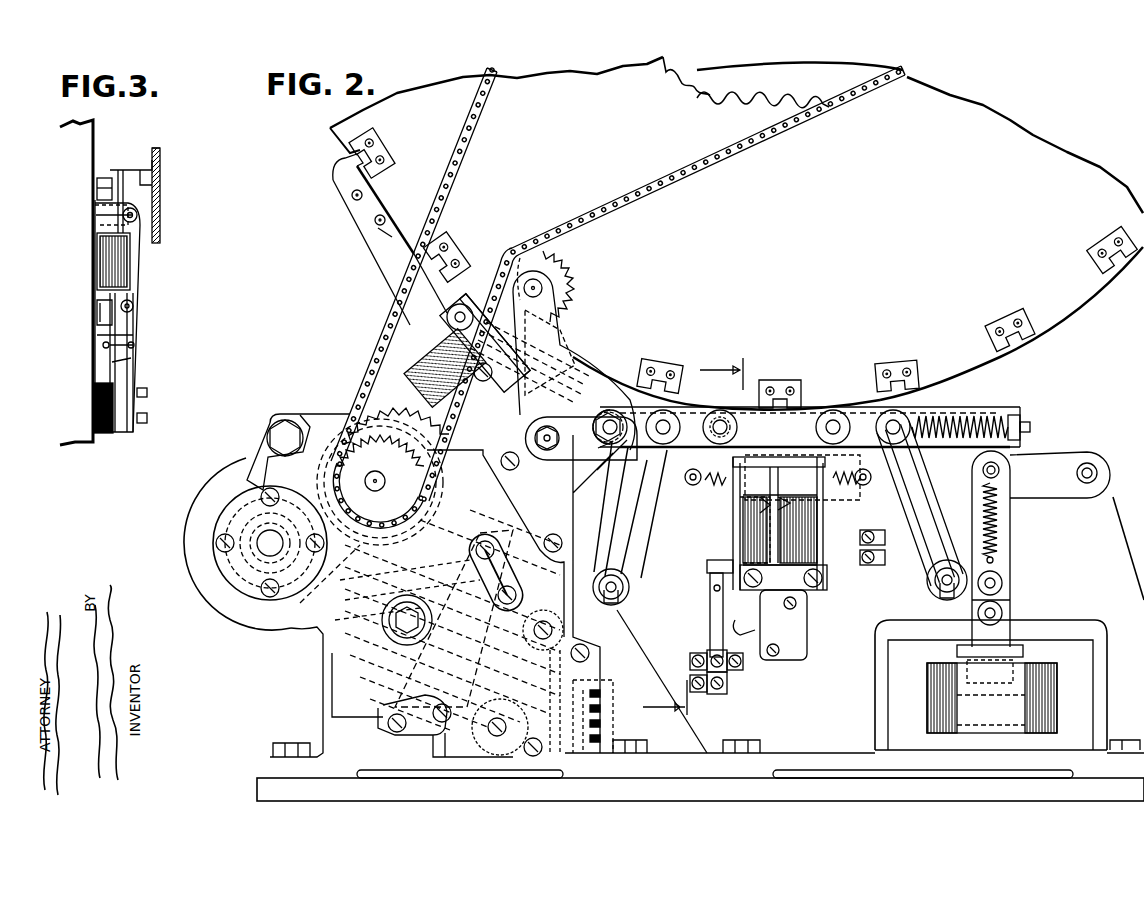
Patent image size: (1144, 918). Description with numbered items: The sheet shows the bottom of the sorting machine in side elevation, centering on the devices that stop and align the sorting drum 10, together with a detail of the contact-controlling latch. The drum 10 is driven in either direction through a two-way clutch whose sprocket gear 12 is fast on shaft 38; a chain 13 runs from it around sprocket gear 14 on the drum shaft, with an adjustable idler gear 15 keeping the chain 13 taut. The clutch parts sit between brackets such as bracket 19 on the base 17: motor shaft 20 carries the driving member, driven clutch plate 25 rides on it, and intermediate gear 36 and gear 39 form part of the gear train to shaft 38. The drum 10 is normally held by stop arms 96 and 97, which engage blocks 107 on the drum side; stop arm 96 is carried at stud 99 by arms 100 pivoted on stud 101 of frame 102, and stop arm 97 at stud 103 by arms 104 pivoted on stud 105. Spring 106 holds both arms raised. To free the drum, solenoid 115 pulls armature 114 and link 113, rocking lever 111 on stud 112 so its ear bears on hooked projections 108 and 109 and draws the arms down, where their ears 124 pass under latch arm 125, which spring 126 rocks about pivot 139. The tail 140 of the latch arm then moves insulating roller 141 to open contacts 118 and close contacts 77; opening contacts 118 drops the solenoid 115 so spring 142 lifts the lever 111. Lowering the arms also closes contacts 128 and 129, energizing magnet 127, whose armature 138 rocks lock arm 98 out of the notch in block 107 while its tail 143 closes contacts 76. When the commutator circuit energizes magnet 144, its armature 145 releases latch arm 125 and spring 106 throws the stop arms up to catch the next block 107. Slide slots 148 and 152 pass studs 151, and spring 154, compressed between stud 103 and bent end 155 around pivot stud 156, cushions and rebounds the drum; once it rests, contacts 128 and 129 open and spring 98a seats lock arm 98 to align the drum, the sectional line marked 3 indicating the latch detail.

In FIG. 2, the section line 3- 3 is at (545, 557).
In FIG. 2, the sorting drum 10 is at (736, 228).
In FIG. 2, the sprocket gear 12 is at (380, 482).
In FIG. 2, the chain 13 is at (683, 178).
In FIG. 2, the sprocket gear 14 is at (710, 97).
In FIG. 2, the adjustable idler gear 15 is at (565, 275).
In FIG. 2, the base 17 is at (612, 787).
In FIG. 2, the bracket 19 is at (332, 742).
In FIG. 2, the shaft 20 is at (260, 533).
In FIG. 2, the driven clutch plate 25 is at (204, 588).
In FIG. 2, the intermediate gear 36 is at (300, 606).
In FIG. 2, the shaft 38 is at (375, 491).
In FIG. 2, the gear 39 is at (420, 412).
In FIG. 2, the contacts 76 is at (573, 363).
In FIG. 3, the contacts 77 is at (113, 320).
In FIG. 3, the stop arm 96 is at (157, 197).
In FIG. 2, the stop arm 96 is at (760, 405).
In FIG. 2, the stop arm 97 is at (845, 404).
In FIG. 2, the lock arm 98 is at (400, 245).
In FIG. 2, the spring 98a is at (582, 438).
In FIG. 2, the stud 99 is at (670, 410).
In FIG. 2, the arms 100 is at (645, 505).
In FIG. 2, the stud 101 is at (628, 590).
In FIG. 3, the frame 102 is at (75, 447).
In FIG. 2, the frame 102 is at (777, 720).
In FIG. 2, the stud 103 is at (905, 418).
In FIG. 2, the arms 104 is at (915, 540).
In FIG. 2, the stud 105 is at (935, 585).
In FIG. 2, the spring 106 is at (875, 508).
In FIG. 2, the block 107 is at (385, 150).
In FIG. 2, the hooked projection 108 is at (652, 477).
In FIG. 2, the hooked projection 109 is at (805, 462).
In FIG. 2, the lever 111 is at (1048, 462).
In FIG. 2, the stud 112 is at (1095, 465).
In FIG. 2, the link 113 is at (1012, 568).
In FIG. 2, the armature 114 is at (1023, 650).
In FIG. 2, the solenoid 115 is at (1057, 680).
In FIG. 3, the contacts 118 is at (133, 338).
In FIG. 2, the contacts 118 is at (710, 598).
In FIG. 3, the ear 124 is at (147, 138).
In FIG. 3, the latch arm 125 is at (120, 170).
In FIG. 3, the spring 126 is at (115, 358).
In FIG. 2, the spring 126 is at (745, 630).
In FIG. 2, the magnet 127 is at (425, 378).
In FIG. 2, the contacts 128 is at (800, 528).
In FIG. 2, the contacts 129 is at (800, 512).
In FIG. 2, the armature 138 is at (435, 345).
In FIG. 3, the pivot 139 is at (136, 218).
In FIG. 3, the tail 140 is at (135, 268).
In FIG. 2, the tail 140 is at (735, 522).
In FIG. 3, the insulating roller 141 is at (134, 306).
In FIG. 2, the insulating roller 141 is at (707, 565).
In FIG. 2, the spring 142 is at (1012, 520).
In FIG. 2, the tail 143 is at (607, 377).
In FIG. 3, the magnet 144 is at (110, 262).
In FIG. 2, the magnet 144 is at (830, 540).
In FIG. 3, the armature 145 is at (104, 216).
In FIG. 2, the slot 148 is at (680, 420).
In FIG. 2, the stud 151 is at (720, 410).
In FIG. 2, the slot 152 is at (838, 412).
In FIG. 2, the spring 154 is at (930, 415).
In FIG. 2, the bent end 155 is at (1018, 415).
In FIG. 2, the pivot stud 156 is at (1031, 427).